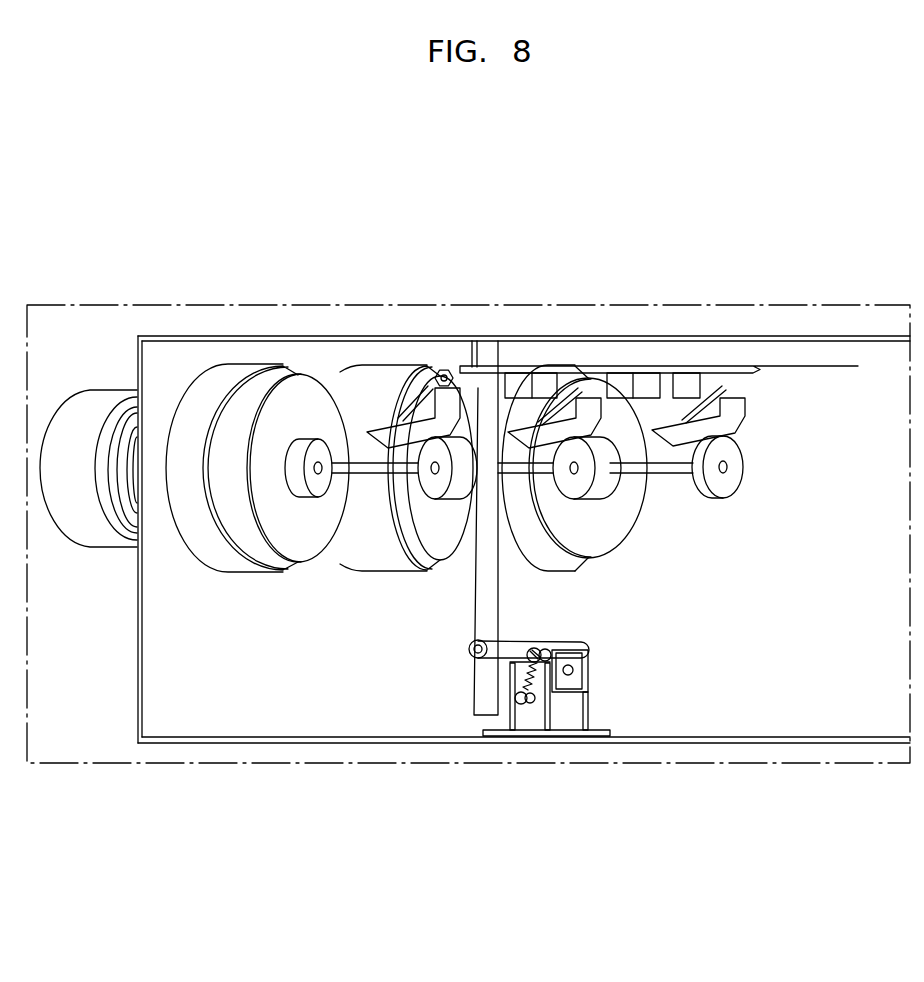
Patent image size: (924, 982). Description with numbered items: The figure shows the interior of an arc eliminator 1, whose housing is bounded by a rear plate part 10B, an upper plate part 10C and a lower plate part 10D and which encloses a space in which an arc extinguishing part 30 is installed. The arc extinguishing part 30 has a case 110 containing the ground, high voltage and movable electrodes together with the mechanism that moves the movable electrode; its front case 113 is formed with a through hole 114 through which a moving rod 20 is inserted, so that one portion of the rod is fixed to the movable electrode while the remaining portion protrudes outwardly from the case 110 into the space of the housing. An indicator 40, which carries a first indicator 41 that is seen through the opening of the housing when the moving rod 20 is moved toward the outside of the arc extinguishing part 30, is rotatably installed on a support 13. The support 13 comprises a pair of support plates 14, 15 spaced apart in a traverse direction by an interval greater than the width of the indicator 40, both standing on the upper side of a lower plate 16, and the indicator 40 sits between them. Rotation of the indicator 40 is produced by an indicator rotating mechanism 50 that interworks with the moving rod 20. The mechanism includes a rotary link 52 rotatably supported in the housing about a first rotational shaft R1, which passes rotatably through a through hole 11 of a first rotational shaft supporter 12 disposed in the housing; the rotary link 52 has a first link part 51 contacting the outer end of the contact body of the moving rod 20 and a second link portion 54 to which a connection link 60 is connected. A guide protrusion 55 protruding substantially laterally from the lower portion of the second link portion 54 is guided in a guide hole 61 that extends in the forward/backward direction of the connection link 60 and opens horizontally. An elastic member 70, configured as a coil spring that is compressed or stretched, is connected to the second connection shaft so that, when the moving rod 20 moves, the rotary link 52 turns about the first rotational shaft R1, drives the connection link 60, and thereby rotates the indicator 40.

The arc eliminator 1 is at (136, 297).
The rear plate part 10B is at (140, 650).
The upper plate part 10C is at (659, 336).
The lower plate part 10D is at (273, 743).
The arc extinguishing part 30 is at (68, 362).
The case 110 is at (198, 395).
The through hole 114 is at (302, 462).
The front case 113 is at (336, 386).
The moving rod 20 is at (367, 464).
The through hole 11 is at (526, 366).
The first rotational shaft supporter 12 is at (542, 366).
The rotary link 52 is at (432, 465).
The lever 51 is at (432, 366).
The first rotational shaft R1 is at (451, 368).
The second link portion 54 is at (490, 366).
The indicator rotating mechanism 50 is at (525, 649).
The guide hole 61 is at (478, 641).
The guide protrusion 55 is at (469, 649).
The connection link 60 is at (498, 655).
The elastic member 70 is at (513, 672).
The indicator 40 is at (594, 679).
The first indicator 41 is at (575, 668).
The support 13 is at (546, 757).
The support plate 14 is at (530, 727).
The lower plate 16 is at (557, 730).
The support plate 15 is at (577, 727).